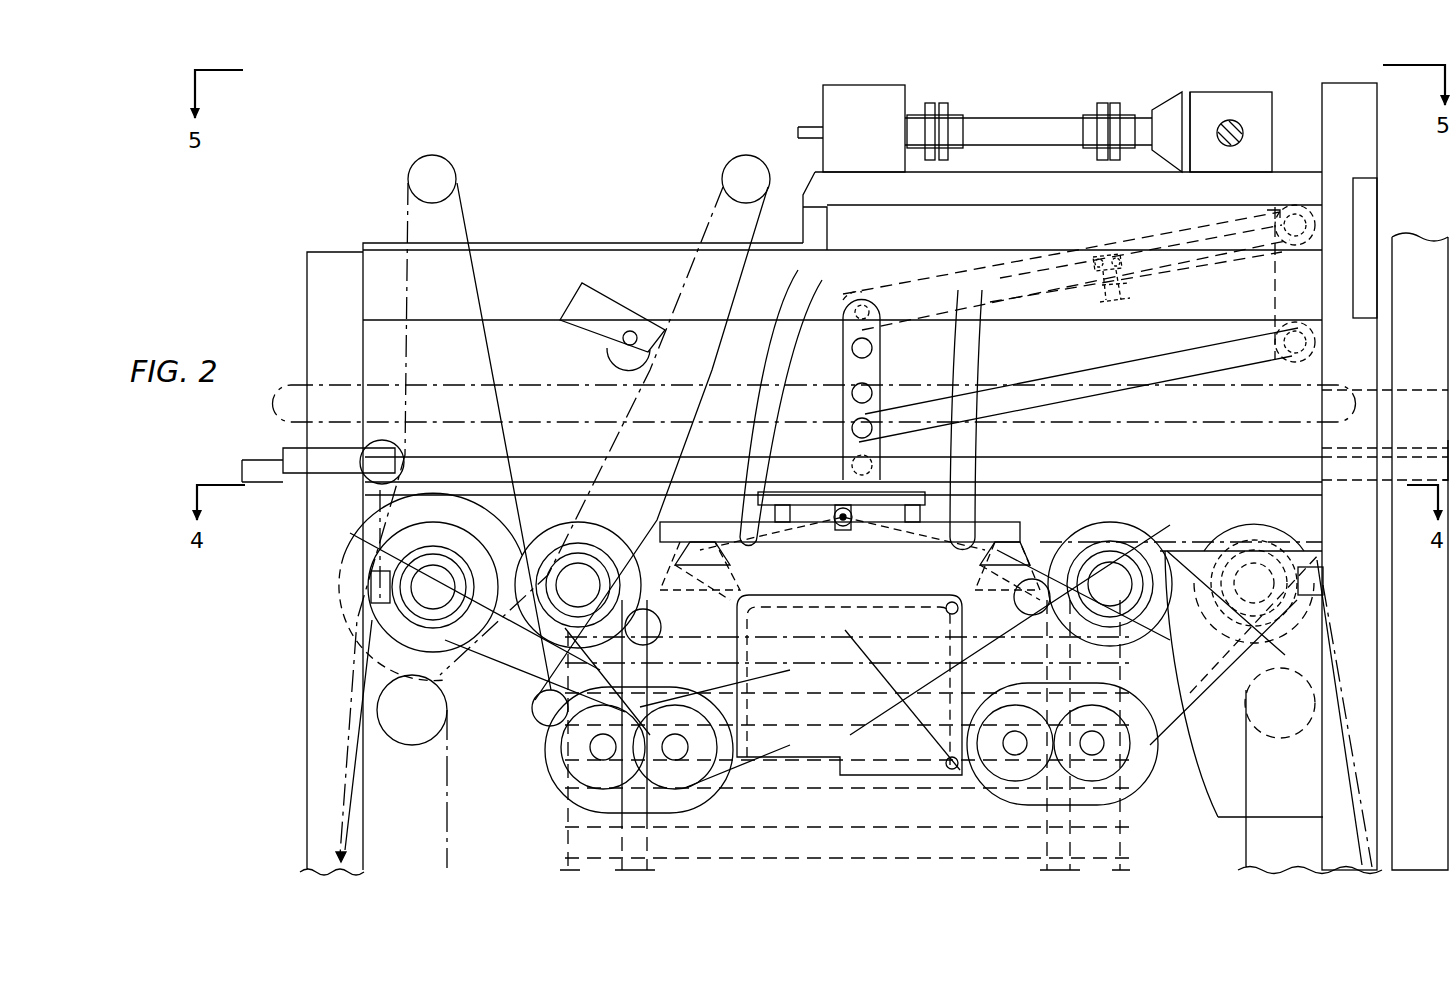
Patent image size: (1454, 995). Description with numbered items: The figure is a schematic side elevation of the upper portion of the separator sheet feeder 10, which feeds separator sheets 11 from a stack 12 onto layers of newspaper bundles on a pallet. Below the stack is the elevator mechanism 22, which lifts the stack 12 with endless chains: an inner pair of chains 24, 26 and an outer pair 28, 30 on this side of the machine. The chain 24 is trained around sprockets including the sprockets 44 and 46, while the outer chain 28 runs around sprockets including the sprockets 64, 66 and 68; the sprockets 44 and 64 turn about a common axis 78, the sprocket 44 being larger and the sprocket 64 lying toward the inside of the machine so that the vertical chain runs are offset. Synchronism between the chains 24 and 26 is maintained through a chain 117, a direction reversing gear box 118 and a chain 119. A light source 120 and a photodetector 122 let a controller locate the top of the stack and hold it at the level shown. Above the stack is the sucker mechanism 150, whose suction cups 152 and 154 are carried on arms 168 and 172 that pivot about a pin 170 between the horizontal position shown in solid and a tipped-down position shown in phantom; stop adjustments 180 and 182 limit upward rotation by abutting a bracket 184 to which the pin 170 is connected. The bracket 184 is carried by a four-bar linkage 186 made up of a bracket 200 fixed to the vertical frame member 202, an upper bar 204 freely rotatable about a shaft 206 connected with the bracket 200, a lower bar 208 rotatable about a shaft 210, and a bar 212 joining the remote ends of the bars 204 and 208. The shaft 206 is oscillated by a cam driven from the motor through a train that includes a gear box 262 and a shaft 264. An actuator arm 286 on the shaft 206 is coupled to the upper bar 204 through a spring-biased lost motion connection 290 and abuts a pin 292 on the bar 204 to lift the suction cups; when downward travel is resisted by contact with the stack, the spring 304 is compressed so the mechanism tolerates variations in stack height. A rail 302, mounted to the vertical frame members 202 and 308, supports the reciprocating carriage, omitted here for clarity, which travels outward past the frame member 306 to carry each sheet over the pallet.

The separator sheet feeder 10 is at (282, 775).
The separator sheet 11 is at (905, 860).
The stack of separator sheets 12 is at (565, 825).
The elevator mechanism 22 is at (800, 845).
The inner chain 24 is at (648, 843).
The inner chain 26 is at (1045, 843).
The outer chain 28 is at (622, 843).
The outer chain 30 is at (1070, 843).
The sprocket 44 is at (660, 598).
The sprocket 46 is at (385, 545).
The sprocket 64 is at (585, 532).
The sprocket 66 is at (430, 540).
The sprocket 68 is at (445, 715).
The common axis 78 is at (540, 680).
The chain 117 is at (458, 698).
The direction reversing gear box 118 is at (716, 796).
The chain 119 is at (792, 762).
The light source 120 is at (345, 640).
The photodetector 122 is at (1320, 576).
The sucker mechanism 150 is at (1015, 500).
The suction cup 152 is at (1040, 535).
The suction cup 154 is at (710, 555).
The arm 168 is at (960, 560).
The pin 170 is at (855, 540).
The arm 172 is at (720, 535).
The stop adjustment 180 is at (1022, 512).
The stop adjustment 182 is at (845, 530).
The bracket 184 is at (800, 495).
The four-bar linkage 186 is at (935, 272).
The bracket 200 is at (1300, 285).
The vertical frame member 202 is at (1372, 152).
The upper bar 204 is at (1002, 275).
The shaft 206 is at (1300, 225).
The lower bar 208 is at (1200, 345).
The shaft 210 is at (1318, 350).
The bar 212 is at (843, 372).
The gear box 262 is at (1230, 110).
The shaft 264 is at (1240, 128).
The actuator arm 286 is at (1200, 240).
The spring-biased lost motion connection 290 is at (1160, 190).
The pin 292 is at (1100, 246).
The rail 302 is at (1448, 448).
The spring 304 is at (1132, 290).
The frame member 306 is at (1378, 712).
The vertical frame member 308 is at (325, 685).